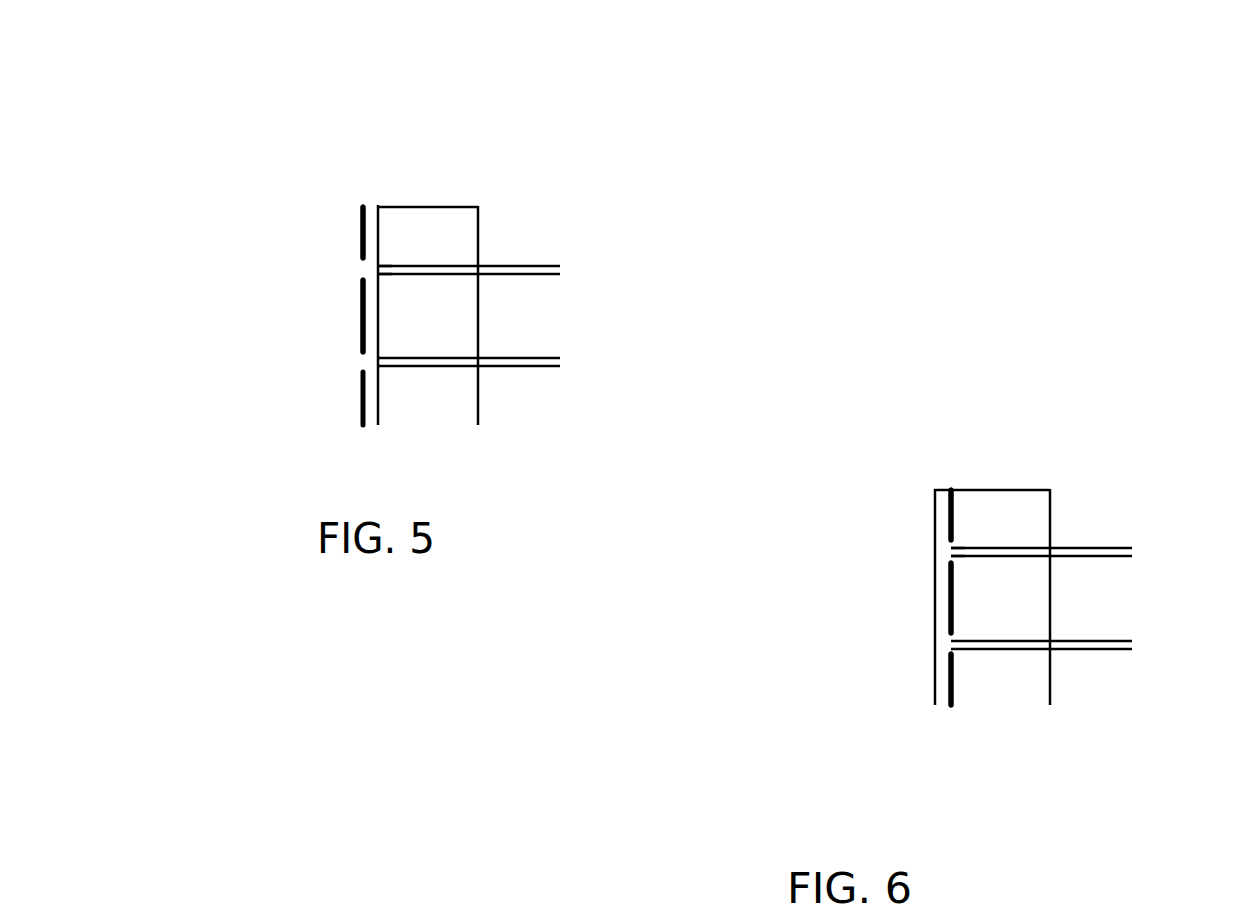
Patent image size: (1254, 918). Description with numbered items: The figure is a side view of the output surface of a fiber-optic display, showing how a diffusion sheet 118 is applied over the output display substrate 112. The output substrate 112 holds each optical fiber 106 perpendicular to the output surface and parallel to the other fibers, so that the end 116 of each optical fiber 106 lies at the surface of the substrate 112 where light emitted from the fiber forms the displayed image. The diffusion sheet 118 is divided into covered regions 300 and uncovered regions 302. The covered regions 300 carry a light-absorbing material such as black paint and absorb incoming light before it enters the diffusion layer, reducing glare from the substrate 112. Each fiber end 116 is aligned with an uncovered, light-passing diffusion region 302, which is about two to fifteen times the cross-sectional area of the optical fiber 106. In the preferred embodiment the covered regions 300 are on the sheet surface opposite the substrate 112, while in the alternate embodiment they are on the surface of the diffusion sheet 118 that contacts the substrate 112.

In FIG. 5, the optical fiber 106 is at (523, 265).
In FIG. 6, the optical fiber 106 is at (1100, 548).
In FIG. 5, the output display substrate 112 is at (380, 237).
In FIG. 6, the output display substrate 112 is at (1033, 489).
In FIG. 5, the optical fiber end 116 is at (380, 270).
In FIG. 6, the optical fiber end 116 is at (951, 548).
In FIG. 5, the diffusion sheet 118 is at (369, 207).
In FIG. 6, the diffusion sheet 118 is at (939, 489).
In FIG. 5, the covered region 300 is at (357, 222).
In FIG. 6, the covered region 300 is at (951, 489).
In FIG. 5, the uncovered region 302 is at (370, 348).
In FIG. 6, the uncovered region 302 is at (951, 637).